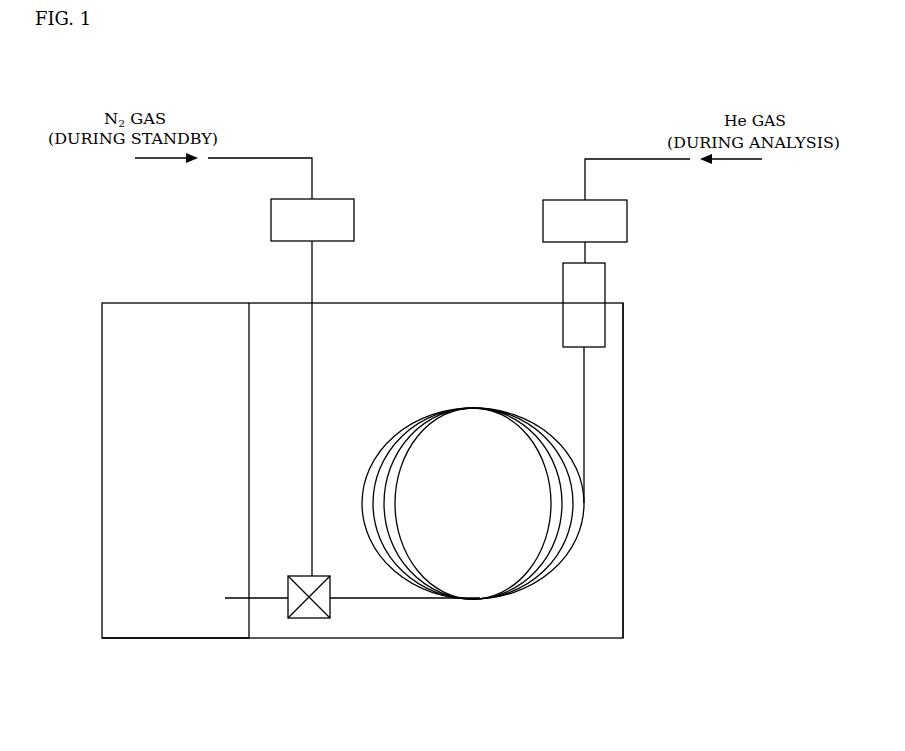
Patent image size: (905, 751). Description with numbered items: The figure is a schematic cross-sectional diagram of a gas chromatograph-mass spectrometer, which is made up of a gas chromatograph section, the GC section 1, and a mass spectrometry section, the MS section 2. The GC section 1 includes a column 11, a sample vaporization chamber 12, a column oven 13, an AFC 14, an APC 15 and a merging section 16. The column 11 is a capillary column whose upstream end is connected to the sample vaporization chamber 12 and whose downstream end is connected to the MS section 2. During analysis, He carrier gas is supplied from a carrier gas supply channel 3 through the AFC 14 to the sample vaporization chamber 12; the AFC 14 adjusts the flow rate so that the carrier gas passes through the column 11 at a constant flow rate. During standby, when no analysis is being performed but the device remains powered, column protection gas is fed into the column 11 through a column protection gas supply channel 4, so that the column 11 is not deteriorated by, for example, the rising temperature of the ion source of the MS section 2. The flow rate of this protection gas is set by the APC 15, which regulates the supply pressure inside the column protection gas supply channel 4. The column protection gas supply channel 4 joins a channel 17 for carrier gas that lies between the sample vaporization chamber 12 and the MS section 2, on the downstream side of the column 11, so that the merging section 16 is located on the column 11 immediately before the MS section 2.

The GC section 1 is at (521, 648).
The MS section 2 is at (170, 648).
The carrier gas supply channel 3 is at (625, 159).
The column protection gas supply channel 4 is at (270, 157).
The column 11 is at (422, 404).
The sample vaporization chamber 12 is at (605, 282).
The column oven 13 is at (623, 461).
The AFC (Auto Flow Controller) 14 is at (627, 220).
The APC (Auto Pressure Controller) 15 is at (354, 219).
The merging section 16 is at (300, 576).
The channel for carrier gas 17 is at (362, 598).